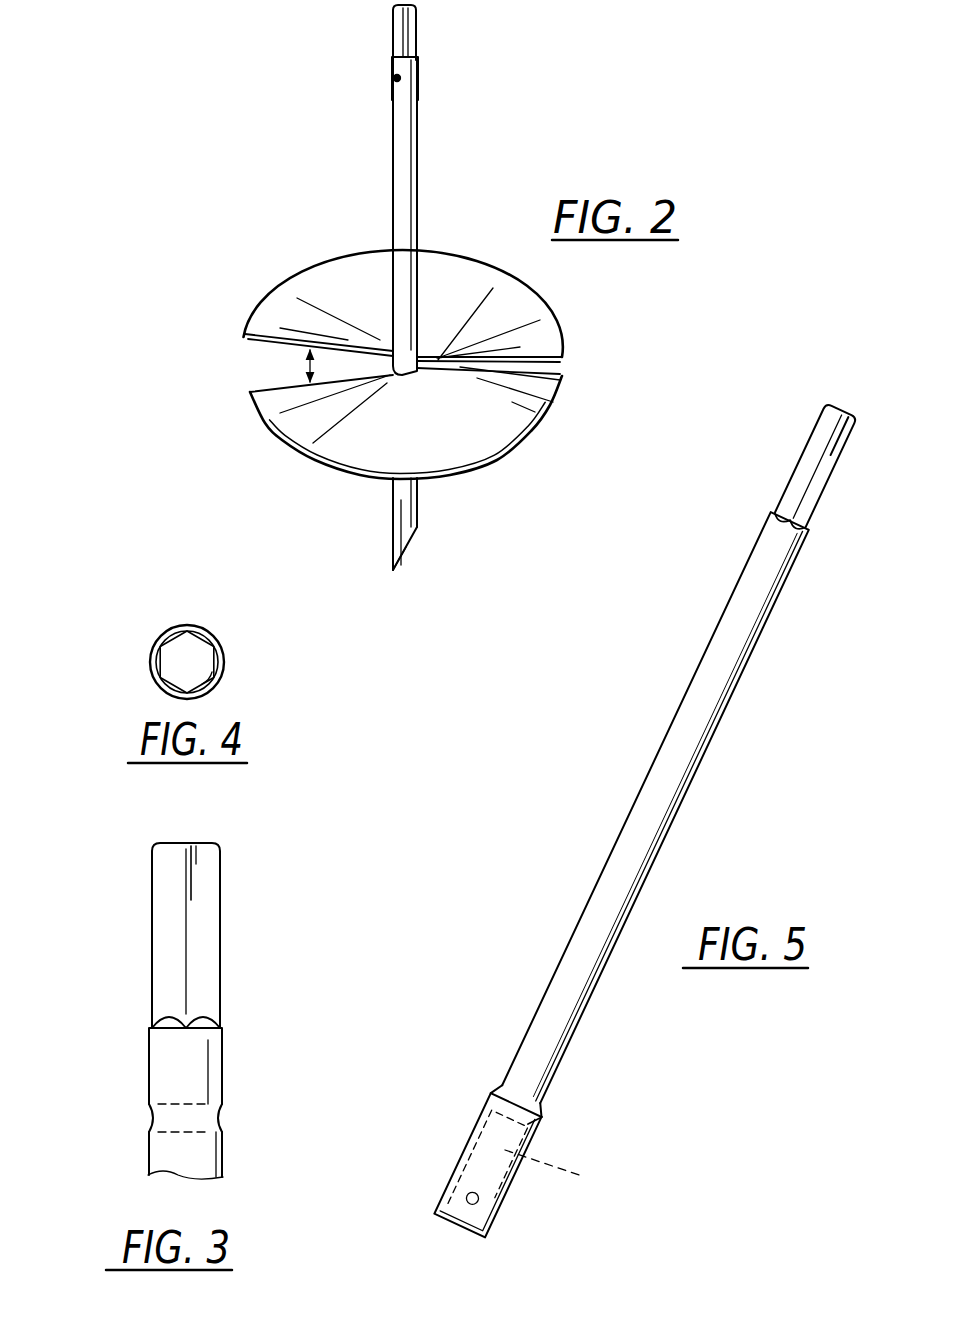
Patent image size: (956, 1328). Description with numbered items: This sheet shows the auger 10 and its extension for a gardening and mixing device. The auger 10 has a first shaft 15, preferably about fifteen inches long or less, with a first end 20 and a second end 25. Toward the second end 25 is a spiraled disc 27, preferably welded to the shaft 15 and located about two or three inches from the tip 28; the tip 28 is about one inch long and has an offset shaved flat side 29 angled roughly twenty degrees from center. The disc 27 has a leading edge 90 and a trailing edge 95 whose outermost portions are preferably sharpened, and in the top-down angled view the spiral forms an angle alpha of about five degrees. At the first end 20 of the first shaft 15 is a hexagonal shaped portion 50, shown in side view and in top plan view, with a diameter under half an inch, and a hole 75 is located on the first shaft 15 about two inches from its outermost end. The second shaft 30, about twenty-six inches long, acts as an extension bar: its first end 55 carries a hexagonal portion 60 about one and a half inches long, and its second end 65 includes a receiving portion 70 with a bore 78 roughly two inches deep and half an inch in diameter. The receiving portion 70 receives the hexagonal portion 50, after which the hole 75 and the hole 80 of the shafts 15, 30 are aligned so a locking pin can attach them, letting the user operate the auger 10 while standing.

In FIG. 2, the auger 10 is at (498, 113).
In FIG. 2, the first shaft 15 is at (419, 183).
In FIG. 3, the first shaft 15 is at (187, 1011).
In FIG. 2, the first end 20 is at (411, 52).
In FIG. 4, the first end 20 is at (184, 656).
In FIG. 3, the first end 20 is at (242, 987).
In FIG. 2, the second end 25 is at (417, 521).
In FIG. 2, the disc 27 is at (391, 364).
In FIG. 2, the tip 28 is at (392, 540).
In FIG. 2, the offset shaved flat side 29 is at (406, 550).
In FIG. 5, the second shaft 30 is at (644, 820).
In FIG. 2, the hexagonal shaped portion 50 is at (401, 33).
In FIG. 4, the hexagonal shaped portion 50 is at (223, 666).
In FIG. 3, the hexagonal shaped portion 50 is at (212, 918).
In FIG. 5, the first end 55 is at (655, 807).
In FIG. 5, the hexagonal portion 60 is at (815, 467).
In FIG. 5, the second end 65 is at (487, 1165).
In FIG. 5, the receiving portion 70 is at (541, 1118).
In FIG. 2, the hole 75 is at (393, 78).
In FIG. 3, the hole 75 is at (217, 1115).
In FIG. 5, the bore 78 is at (563, 1172).
In FIG. 5, the hole 80 is at (472, 1198).
In FIG. 2, the leading edge 90 is at (255, 391).
In FIG. 2, the trailing edge 95 is at (246, 336).